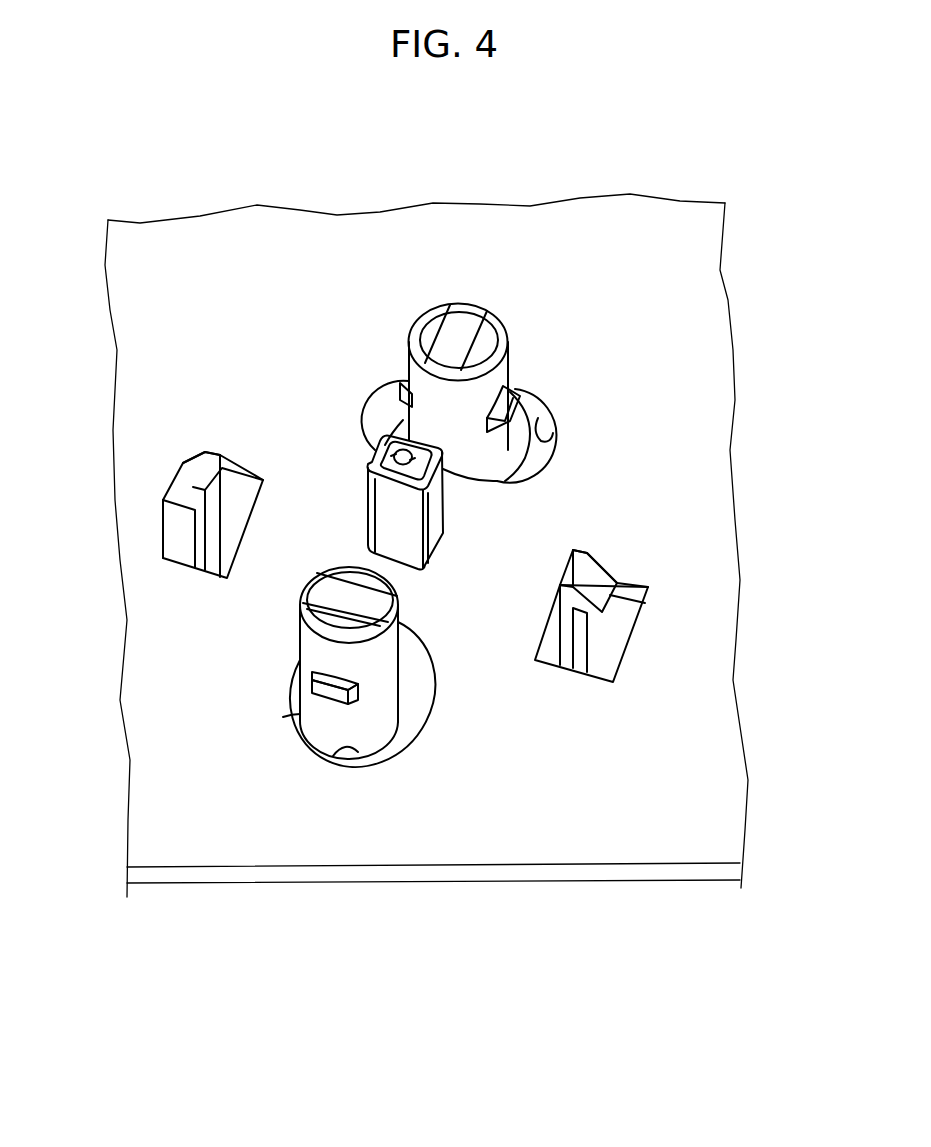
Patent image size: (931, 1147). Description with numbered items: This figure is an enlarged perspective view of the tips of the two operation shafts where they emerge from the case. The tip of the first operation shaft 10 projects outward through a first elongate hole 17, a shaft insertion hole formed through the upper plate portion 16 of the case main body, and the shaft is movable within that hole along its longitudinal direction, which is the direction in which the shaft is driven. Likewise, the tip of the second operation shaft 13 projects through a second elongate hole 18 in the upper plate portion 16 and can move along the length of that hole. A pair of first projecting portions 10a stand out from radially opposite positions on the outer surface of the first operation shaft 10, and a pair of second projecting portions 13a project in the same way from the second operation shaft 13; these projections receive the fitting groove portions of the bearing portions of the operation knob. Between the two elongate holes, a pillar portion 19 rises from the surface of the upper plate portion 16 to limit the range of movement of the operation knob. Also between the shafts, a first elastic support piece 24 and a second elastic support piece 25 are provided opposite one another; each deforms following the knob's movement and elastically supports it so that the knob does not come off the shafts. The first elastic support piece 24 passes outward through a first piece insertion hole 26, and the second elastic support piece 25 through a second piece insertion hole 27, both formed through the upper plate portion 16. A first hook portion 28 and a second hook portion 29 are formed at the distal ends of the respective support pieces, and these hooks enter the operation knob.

The first operation shaft 10 is at (307, 650).
The first projecting portions 10a is at (328, 700).
The second operation shaft 13 is at (490, 378).
The second projecting portions 13a is at (405, 380).
The upper plate portion 16 is at (710, 767).
The first elongate hole 17 is at (355, 757).
The second elongate hole 18 is at (560, 442).
The pillar portion 19 is at (393, 505).
The first elastic support piece 24 is at (213, 548).
The second elastic support piece 25 is at (580, 655).
The first piece insertion hole 26 is at (183, 532).
The second piece insertion hole 27 is at (620, 615).
The first hook portion 28 is at (185, 477).
The second hook portion 29 is at (592, 577).